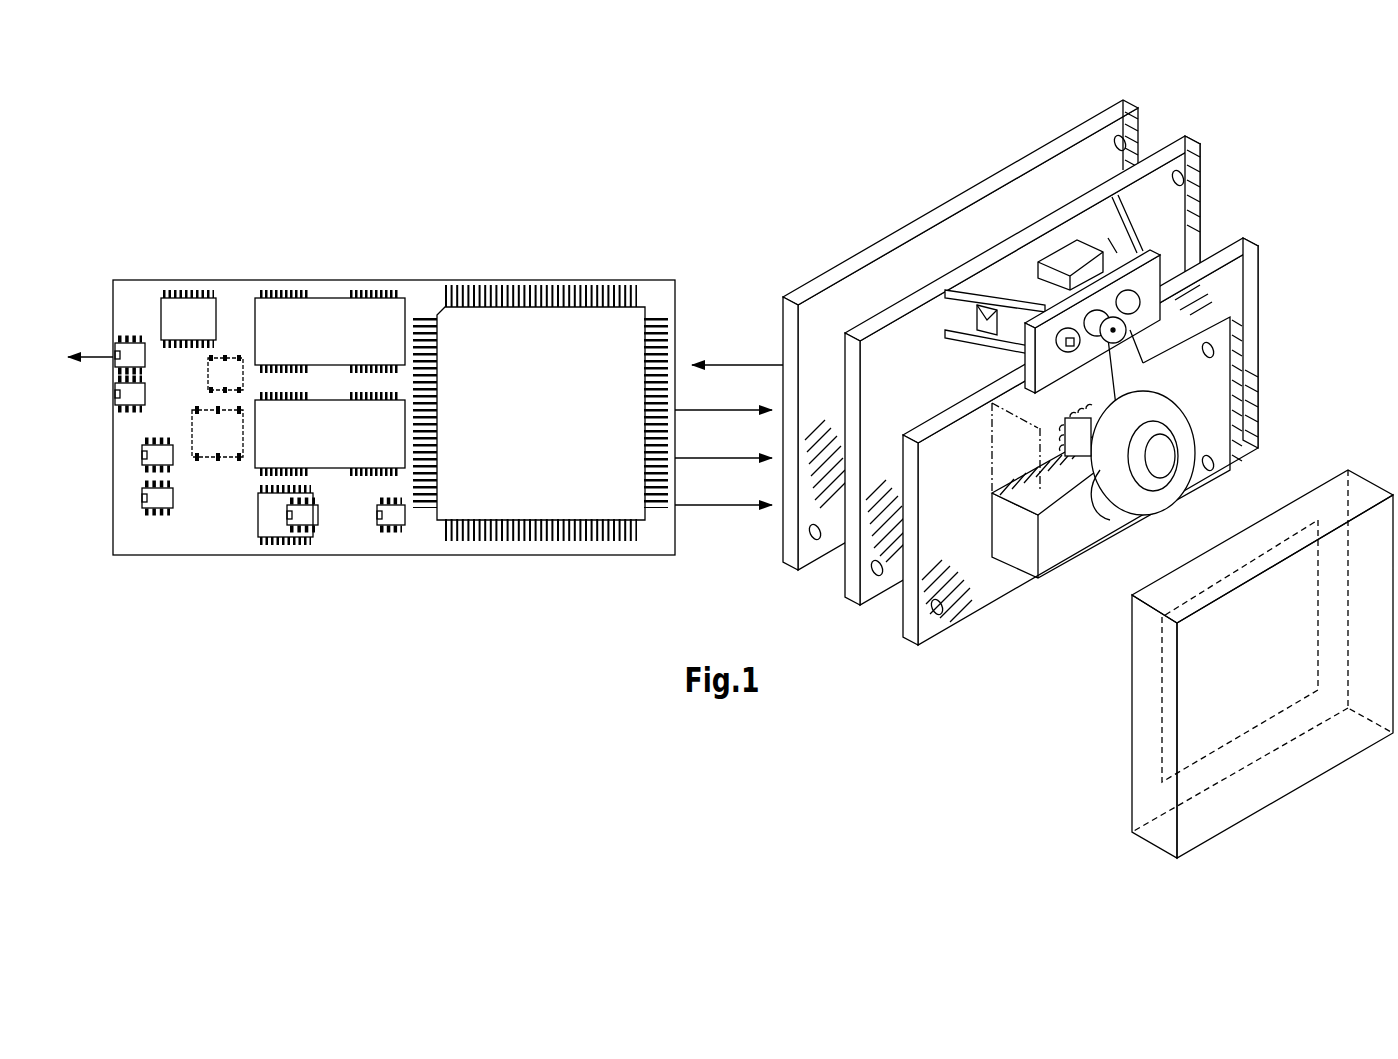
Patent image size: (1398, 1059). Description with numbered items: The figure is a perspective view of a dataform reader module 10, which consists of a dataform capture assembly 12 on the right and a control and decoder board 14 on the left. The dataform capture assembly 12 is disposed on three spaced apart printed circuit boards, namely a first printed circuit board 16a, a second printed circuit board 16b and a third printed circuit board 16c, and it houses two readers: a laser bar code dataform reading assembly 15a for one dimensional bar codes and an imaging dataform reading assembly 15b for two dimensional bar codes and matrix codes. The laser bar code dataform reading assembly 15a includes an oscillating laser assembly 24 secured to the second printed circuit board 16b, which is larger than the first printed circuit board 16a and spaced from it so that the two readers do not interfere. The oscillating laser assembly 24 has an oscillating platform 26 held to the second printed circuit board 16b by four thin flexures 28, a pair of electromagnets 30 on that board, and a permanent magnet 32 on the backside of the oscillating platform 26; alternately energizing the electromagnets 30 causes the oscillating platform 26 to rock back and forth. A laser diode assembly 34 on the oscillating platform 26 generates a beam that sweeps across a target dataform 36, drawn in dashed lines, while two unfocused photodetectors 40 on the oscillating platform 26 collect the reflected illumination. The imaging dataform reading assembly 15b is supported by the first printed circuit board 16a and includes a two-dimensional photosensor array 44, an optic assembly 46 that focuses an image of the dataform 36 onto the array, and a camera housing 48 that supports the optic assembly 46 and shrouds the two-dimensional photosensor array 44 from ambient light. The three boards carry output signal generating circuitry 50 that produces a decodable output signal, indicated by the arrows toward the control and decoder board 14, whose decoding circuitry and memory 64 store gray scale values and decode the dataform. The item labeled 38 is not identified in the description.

The dataform reader module 10 is at (701, 152).
The dataform capture assembly 12 is at (1210, 117).
The control and decoder board 14 is at (323, 266).
The memory 64 is at (342, 328).
The dataform 36 is at (552, 353).
The output signal generating circuitry 50 is at (752, 365).
The first printed circuit board 16a is at (948, 620).
The second printed circuit board 16b is at (886, 313).
The third printed circuit board 16c is at (818, 293).
The flexures 28 is at (955, 295).
The electromagnets 30 is at (1000, 292).
The permanent magnet 32 is at (952, 312).
The laser diode assembly 34 is at (1068, 328).
The oscillating laser assembly 24 is at (1172, 242).
The laser bar code dataform reading assembly 15a is at (1222, 237).
The oscillating platform 26 is at (1130, 300).
The photodetectors 40 is at (1035, 355).
The imaging dataform reading assembly 15b is at (1278, 354).
The camera housing 48 is at (1232, 388).
The optic assembly 46 is at (1150, 455).
The two-dimensional photosensor array 44 is at (1087, 427).
The target window 38 is at (1327, 492).